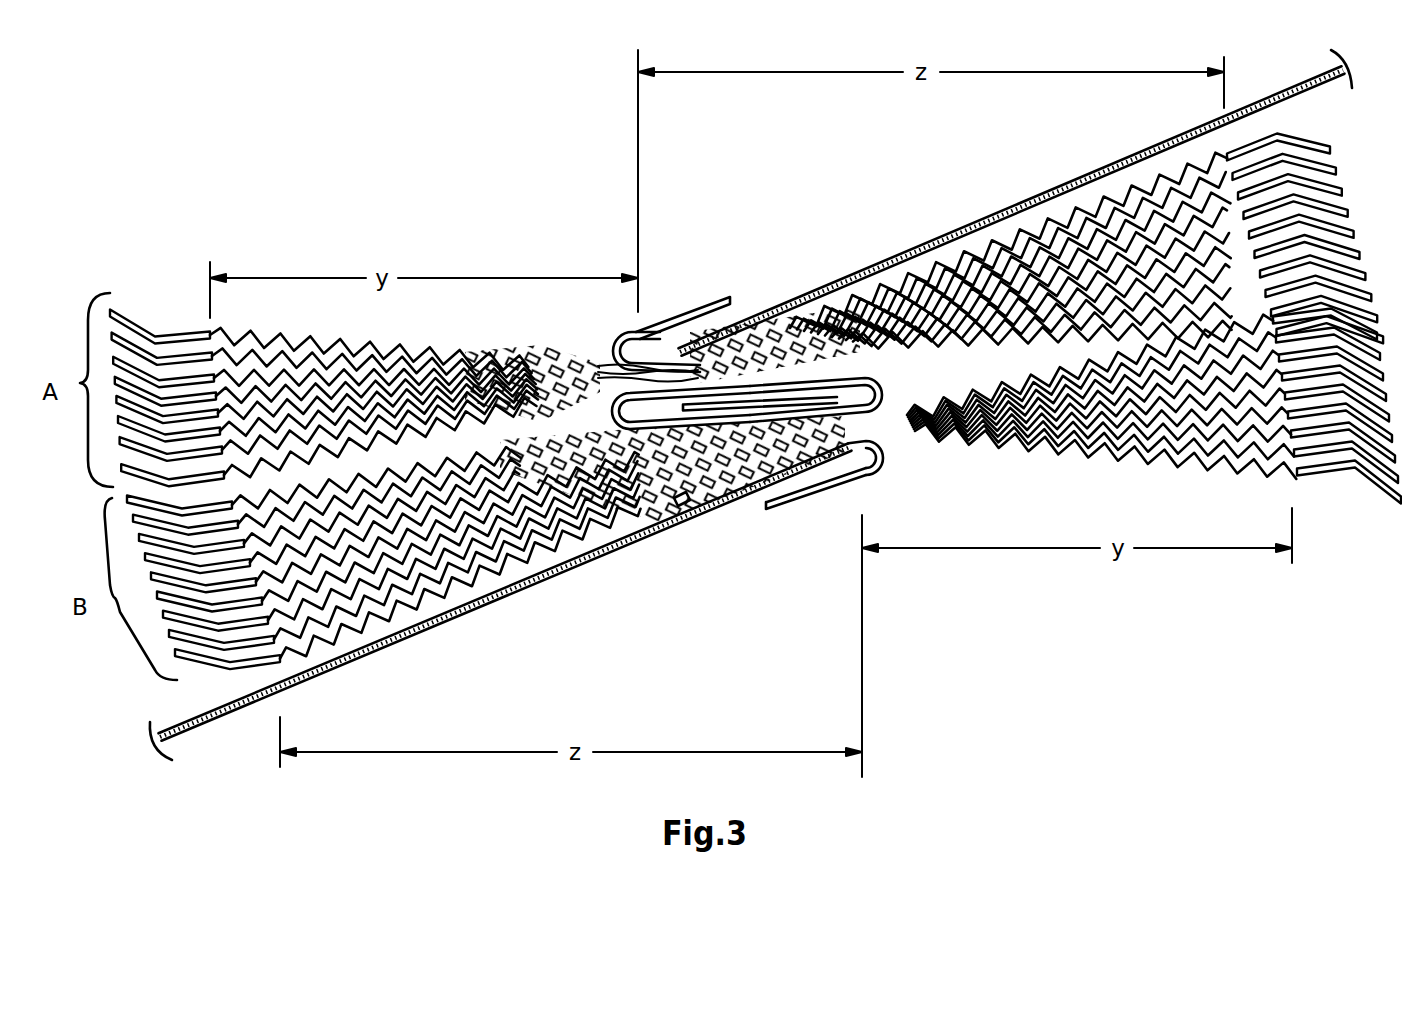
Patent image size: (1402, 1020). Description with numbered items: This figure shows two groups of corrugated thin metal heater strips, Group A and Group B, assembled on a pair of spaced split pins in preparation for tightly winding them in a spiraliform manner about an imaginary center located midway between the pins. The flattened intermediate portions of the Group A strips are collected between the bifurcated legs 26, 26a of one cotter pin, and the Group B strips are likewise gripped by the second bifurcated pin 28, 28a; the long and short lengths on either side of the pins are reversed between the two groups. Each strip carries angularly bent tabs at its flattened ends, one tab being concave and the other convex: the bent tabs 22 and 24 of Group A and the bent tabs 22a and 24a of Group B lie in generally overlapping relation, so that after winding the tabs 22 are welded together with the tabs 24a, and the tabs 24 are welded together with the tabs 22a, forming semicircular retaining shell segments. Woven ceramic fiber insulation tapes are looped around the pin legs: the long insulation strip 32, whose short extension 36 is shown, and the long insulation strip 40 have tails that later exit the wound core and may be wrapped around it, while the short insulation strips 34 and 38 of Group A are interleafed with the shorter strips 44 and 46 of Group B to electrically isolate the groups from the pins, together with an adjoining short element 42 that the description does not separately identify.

The bent tab 22 is at (1312, 142).
The bent tab of Group B 22a is at (204, 645).
The bent tab 24 is at (138, 333).
The bent tab of Group B 24a is at (1363, 452).
The bifurcated pin leg 26 is at (652, 350).
The bifurcated pin leg 26a is at (612, 420).
The bifurcated pin 28 is at (872, 464).
The bifurcated pin leg 28a is at (880, 390).
The insulation strip 32 is at (1010, 210).
The short insulation strip 34 is at (797, 335).
The short strip 36 is at (707, 306).
The short insulation strip 38 is at (660, 433).
The insulation strip 40 is at (568, 572).
The lower clip arm 42 is at (813, 505).
The shorter insulation strip of Group B 44 is at (752, 433).
The shorter insulation strip of Group B 46 is at (677, 505).